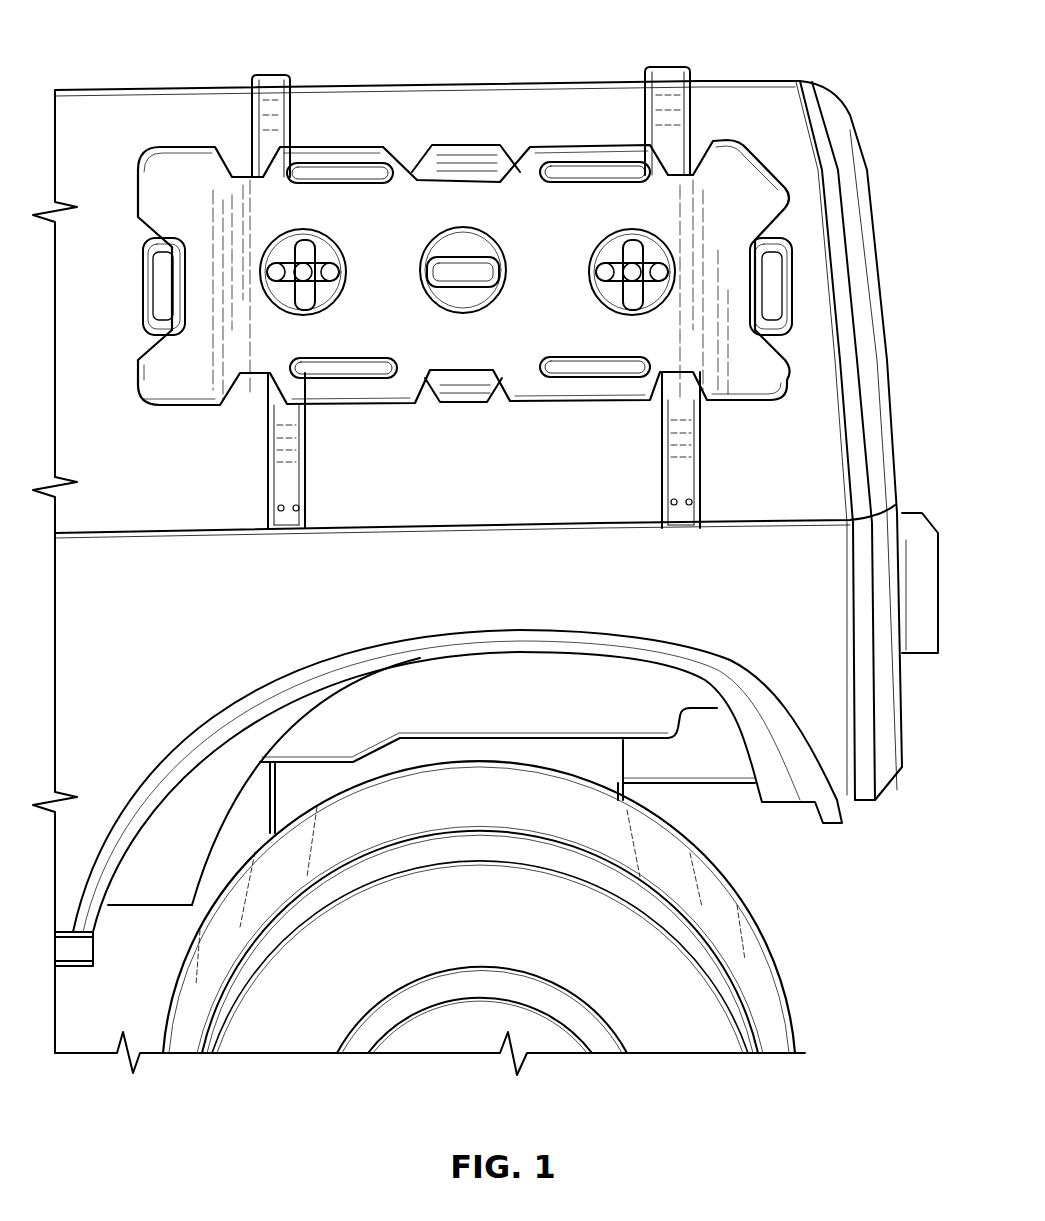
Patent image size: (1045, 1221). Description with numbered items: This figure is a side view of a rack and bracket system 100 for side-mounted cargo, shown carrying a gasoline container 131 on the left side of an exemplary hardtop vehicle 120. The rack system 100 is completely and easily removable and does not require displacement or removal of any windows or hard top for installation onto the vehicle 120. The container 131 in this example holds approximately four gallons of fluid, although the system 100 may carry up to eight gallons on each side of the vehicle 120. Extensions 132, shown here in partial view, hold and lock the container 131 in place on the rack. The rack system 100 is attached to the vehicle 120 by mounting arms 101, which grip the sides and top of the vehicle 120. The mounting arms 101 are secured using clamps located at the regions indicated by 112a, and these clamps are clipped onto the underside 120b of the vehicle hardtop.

The rack and bracket system 100 is at (389, 125).
The mounting arms 101 is at (683, 66).
The clamp regions 112a is at (316, 506).
The vehicle 120 is at (772, 78).
The underside of the vehicle hardtop 120b is at (493, 540).
The gasoline container 131 is at (544, 142).
The extensions 132 is at (268, 281).